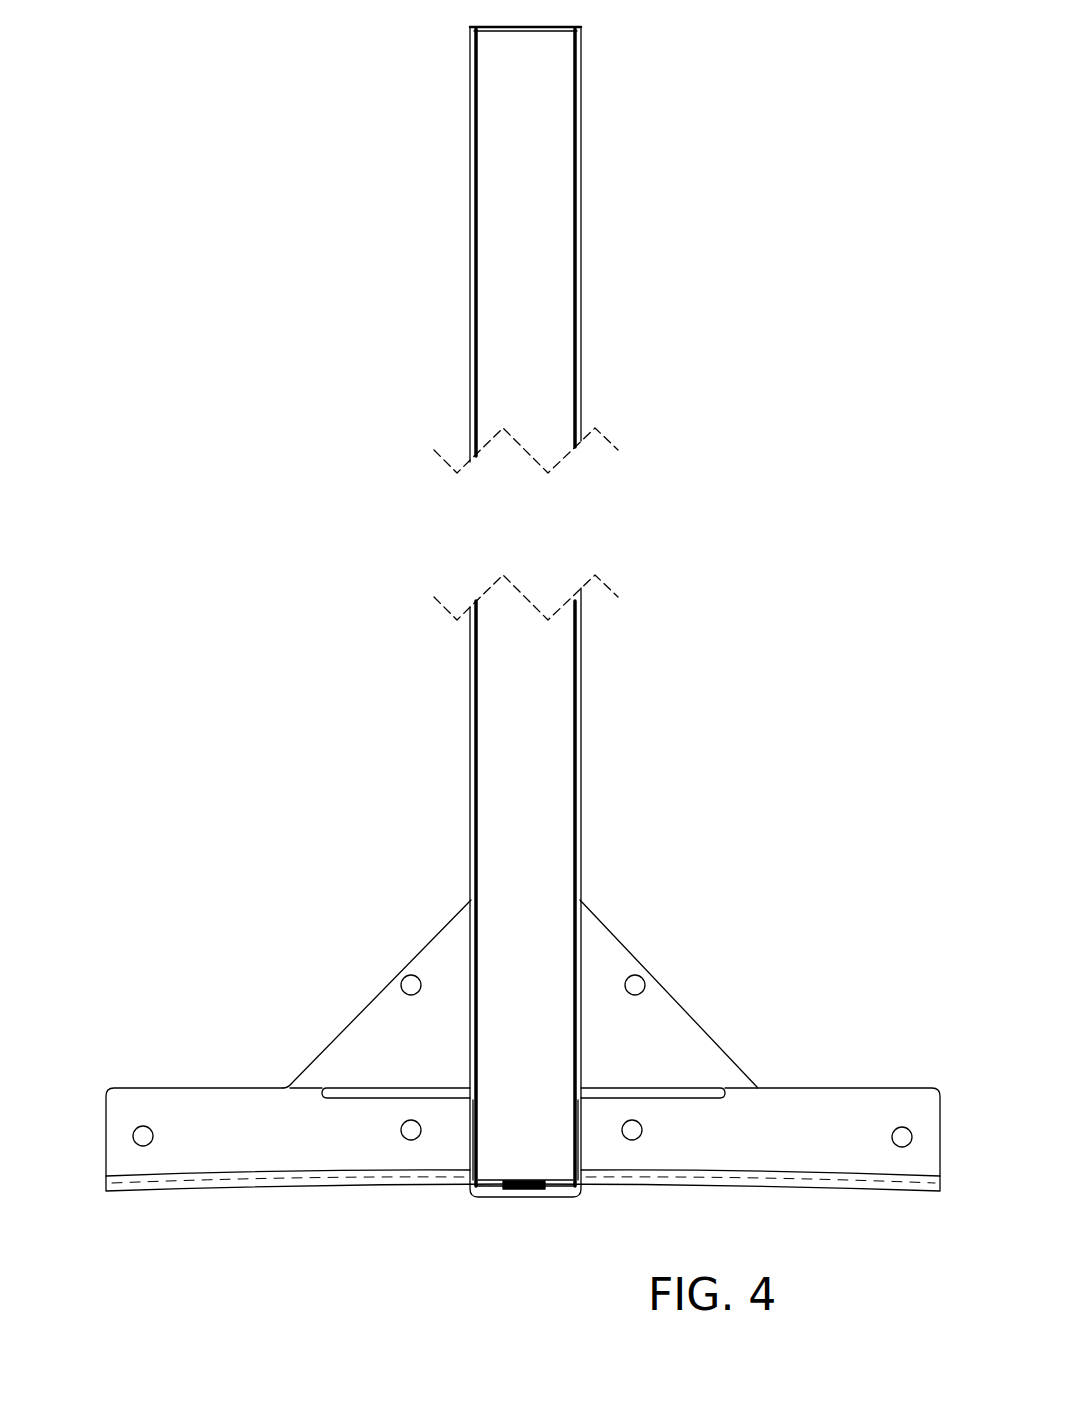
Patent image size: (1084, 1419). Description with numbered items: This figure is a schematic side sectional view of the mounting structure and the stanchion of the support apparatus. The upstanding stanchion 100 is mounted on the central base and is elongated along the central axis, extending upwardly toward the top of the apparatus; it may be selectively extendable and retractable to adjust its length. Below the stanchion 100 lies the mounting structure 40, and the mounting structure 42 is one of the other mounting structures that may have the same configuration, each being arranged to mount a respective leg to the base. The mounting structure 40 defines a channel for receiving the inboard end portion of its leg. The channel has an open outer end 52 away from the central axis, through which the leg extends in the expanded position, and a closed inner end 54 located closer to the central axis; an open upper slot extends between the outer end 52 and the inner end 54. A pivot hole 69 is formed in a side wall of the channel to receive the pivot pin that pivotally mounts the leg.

The stanchion 100 is at (582, 292).
The mounting structure 40 is at (230, 1212).
The mounting structure 42 is at (806, 1230).
The outer end 52 is at (106, 1125).
The inner end 54 is at (460, 1140).
The pivot hole 69 is at (405, 1141).